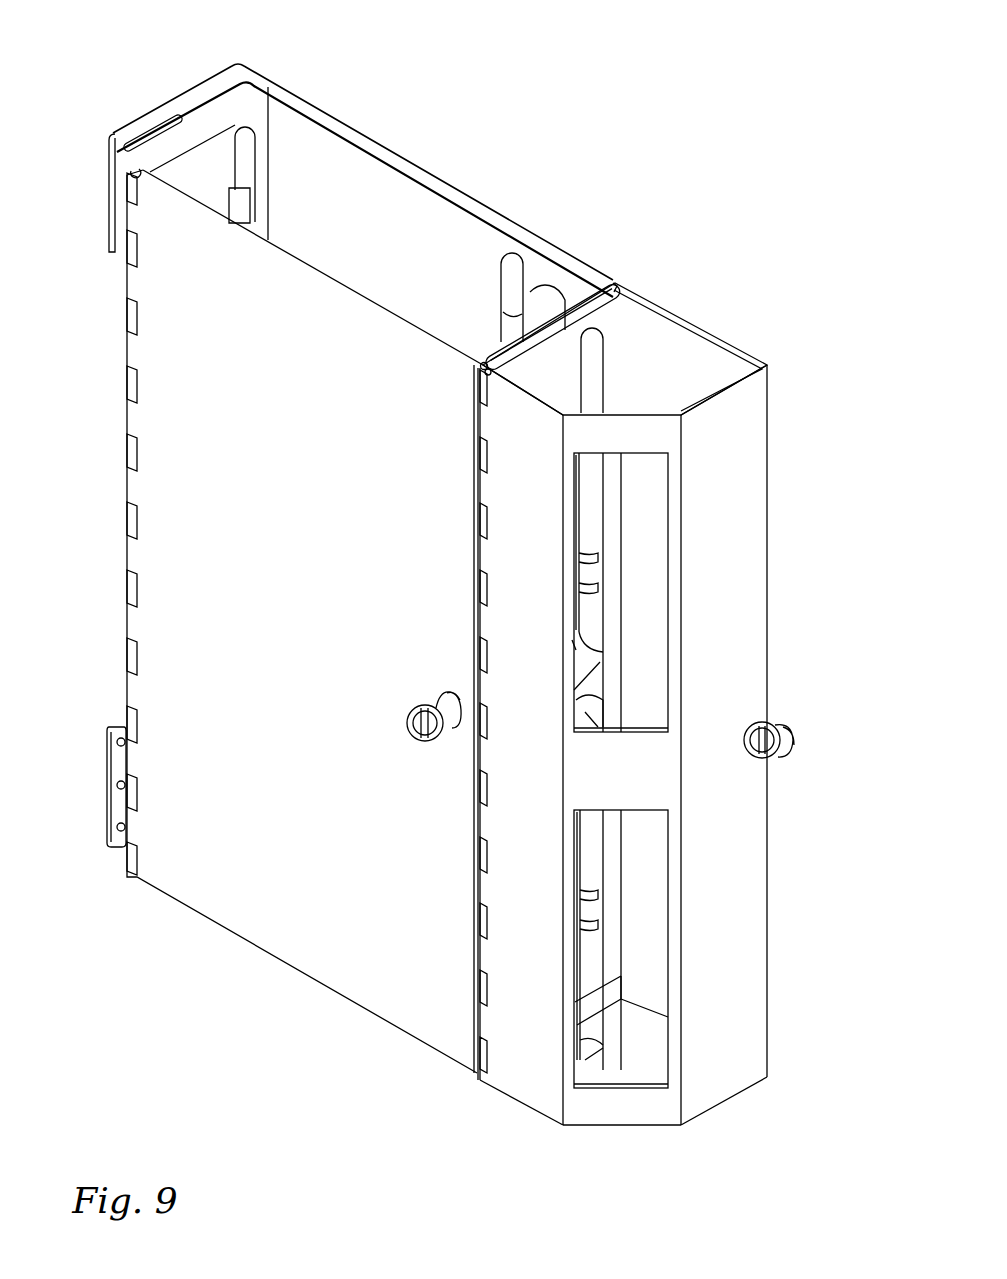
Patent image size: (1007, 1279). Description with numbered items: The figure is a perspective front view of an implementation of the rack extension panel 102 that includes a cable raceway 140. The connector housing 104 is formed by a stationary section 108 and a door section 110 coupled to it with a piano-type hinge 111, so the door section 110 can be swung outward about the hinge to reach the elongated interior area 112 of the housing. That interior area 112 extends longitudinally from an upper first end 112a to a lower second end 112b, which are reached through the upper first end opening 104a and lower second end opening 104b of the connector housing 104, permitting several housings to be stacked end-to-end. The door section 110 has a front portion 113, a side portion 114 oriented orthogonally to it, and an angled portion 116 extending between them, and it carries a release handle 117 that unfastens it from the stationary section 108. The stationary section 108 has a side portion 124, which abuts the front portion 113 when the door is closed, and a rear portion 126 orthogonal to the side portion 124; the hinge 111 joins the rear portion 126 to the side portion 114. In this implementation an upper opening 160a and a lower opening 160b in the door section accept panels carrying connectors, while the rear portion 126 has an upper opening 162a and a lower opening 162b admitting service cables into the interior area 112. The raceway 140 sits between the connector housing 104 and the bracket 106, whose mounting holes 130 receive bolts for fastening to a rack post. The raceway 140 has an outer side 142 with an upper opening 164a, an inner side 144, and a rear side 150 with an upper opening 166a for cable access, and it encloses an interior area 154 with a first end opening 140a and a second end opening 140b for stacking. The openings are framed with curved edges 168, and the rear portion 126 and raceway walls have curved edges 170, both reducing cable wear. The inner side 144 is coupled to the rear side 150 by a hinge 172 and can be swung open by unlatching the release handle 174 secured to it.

The rack extension panel 102 is at (615, 62).
The connector housing 104 is at (748, 270).
The upper first end opening 104a is at (698, 1130).
The lower second end opening 104b is at (678, 357).
The bracket 106 is at (112, 168).
The stationary section 108 is at (767, 350).
The door section 110 is at (790, 495).
The piano-type hinge 111 is at (480, 1000).
The elongated interior area 112 is at (638, 357).
The upper first end 112a is at (740, 1135).
The lower second end 112b is at (677, 273).
The front portion 113 is at (748, 555).
The side portion 114 is at (530, 1075).
The angled portion 116 is at (655, 437).
The release handle 117 is at (777, 755).
The side portion 124 is at (710, 330).
The rear portion 126 is at (578, 310).
The mounting holes 130 is at (150, 130).
The raceway 140 is at (430, 105).
The first end opening 140a is at (157, 928).
The second end opening 140b is at (345, 195).
The outer side 142 is at (448, 190).
The inner side 144 is at (128, 425).
The rear side 150 is at (265, 137).
The interior area 154 is at (300, 175).
The upper opening 160a is at (648, 628).
The lower opening 160b is at (648, 920).
The upper opening 162a is at (558, 380).
The lower opening 162b is at (600, 853).
The upper opening 164a is at (537, 297).
The upper opening 166a is at (187, 162).
The curved edges 168 is at (208, 175).
The curved edges 170 is at (247, 105).
The hinge 172 is at (128, 520).
The release handle 174 is at (408, 723).